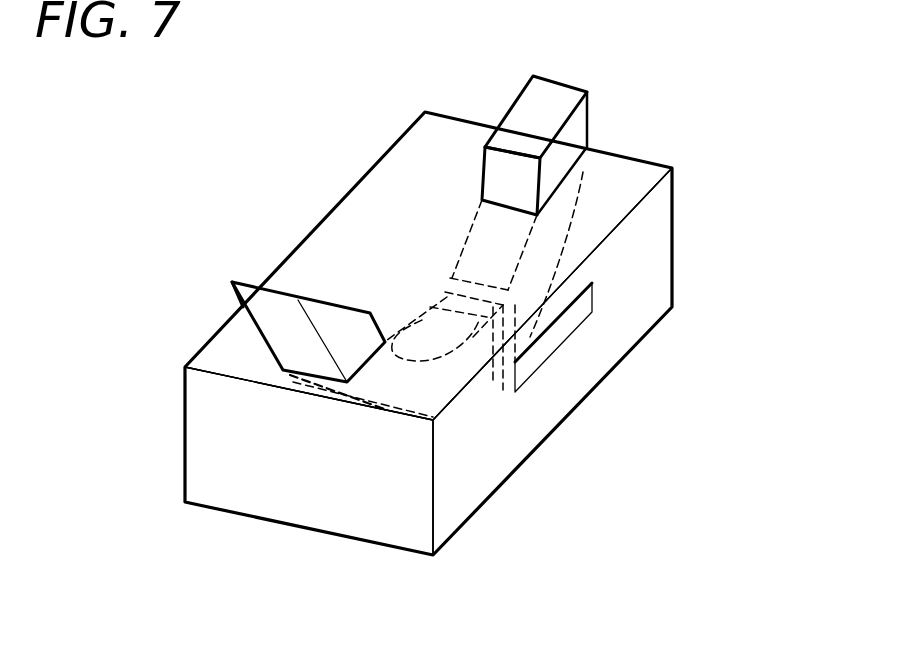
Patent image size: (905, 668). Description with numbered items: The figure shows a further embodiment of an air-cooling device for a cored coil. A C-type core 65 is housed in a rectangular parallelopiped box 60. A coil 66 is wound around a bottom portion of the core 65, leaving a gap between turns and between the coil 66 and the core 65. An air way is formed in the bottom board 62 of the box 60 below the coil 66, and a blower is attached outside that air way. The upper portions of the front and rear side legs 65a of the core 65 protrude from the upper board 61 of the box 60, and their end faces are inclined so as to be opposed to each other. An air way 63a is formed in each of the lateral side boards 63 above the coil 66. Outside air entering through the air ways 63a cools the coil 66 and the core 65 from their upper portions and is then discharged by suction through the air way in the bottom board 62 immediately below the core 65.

The rectangular parallelopiped box 60 is at (668, 151).
The upper board 61 is at (632, 188).
The bottom board 62 is at (477, 515).
The lateral side board 63 is at (647, 288).
The air way 63a is at (577, 318).
The C-type core 65 is at (560, 238).
The front and rear side legs 65a is at (583, 172).
The coil 66 is at (447, 297).